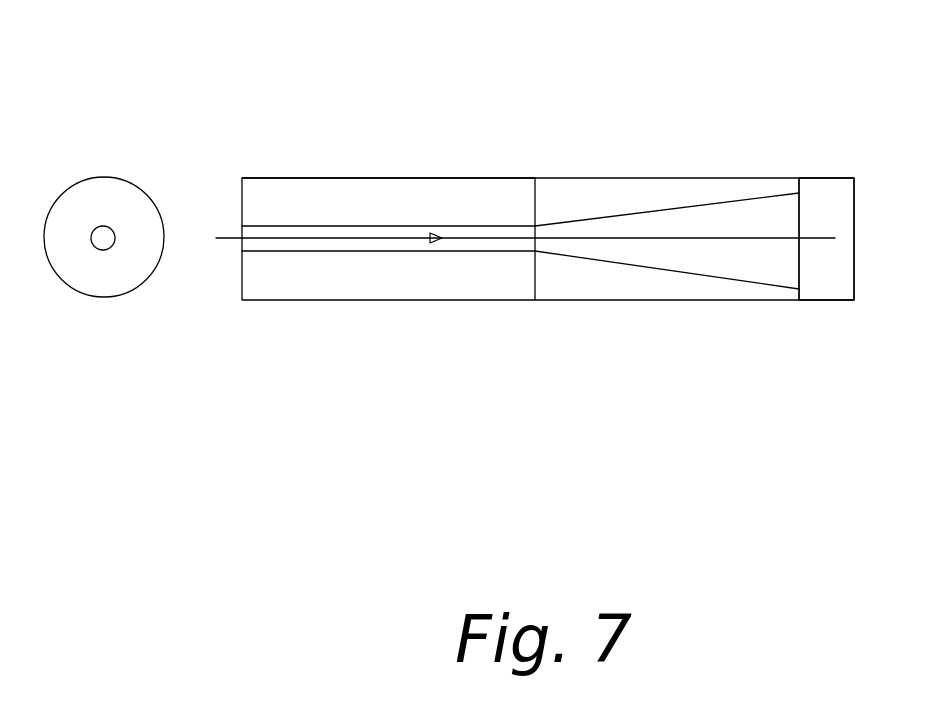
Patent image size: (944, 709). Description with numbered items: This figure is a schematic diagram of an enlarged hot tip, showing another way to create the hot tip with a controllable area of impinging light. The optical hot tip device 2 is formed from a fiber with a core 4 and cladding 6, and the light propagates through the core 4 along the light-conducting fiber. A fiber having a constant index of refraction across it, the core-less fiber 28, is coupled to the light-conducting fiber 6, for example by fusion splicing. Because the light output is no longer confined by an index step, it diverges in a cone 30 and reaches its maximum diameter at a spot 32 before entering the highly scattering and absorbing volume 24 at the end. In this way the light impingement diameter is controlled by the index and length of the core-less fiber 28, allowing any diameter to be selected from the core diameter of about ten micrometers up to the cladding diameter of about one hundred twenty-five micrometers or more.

The optical hot tip device 2 is at (254, 174).
The core 4 is at (103, 240).
The cladding 6 is at (134, 223).
The highly scattering and absorbing volume 24 is at (824, 199).
The core-less fiber 28 is at (562, 292).
The cone 30 is at (698, 268).
The spot 32 is at (797, 292).